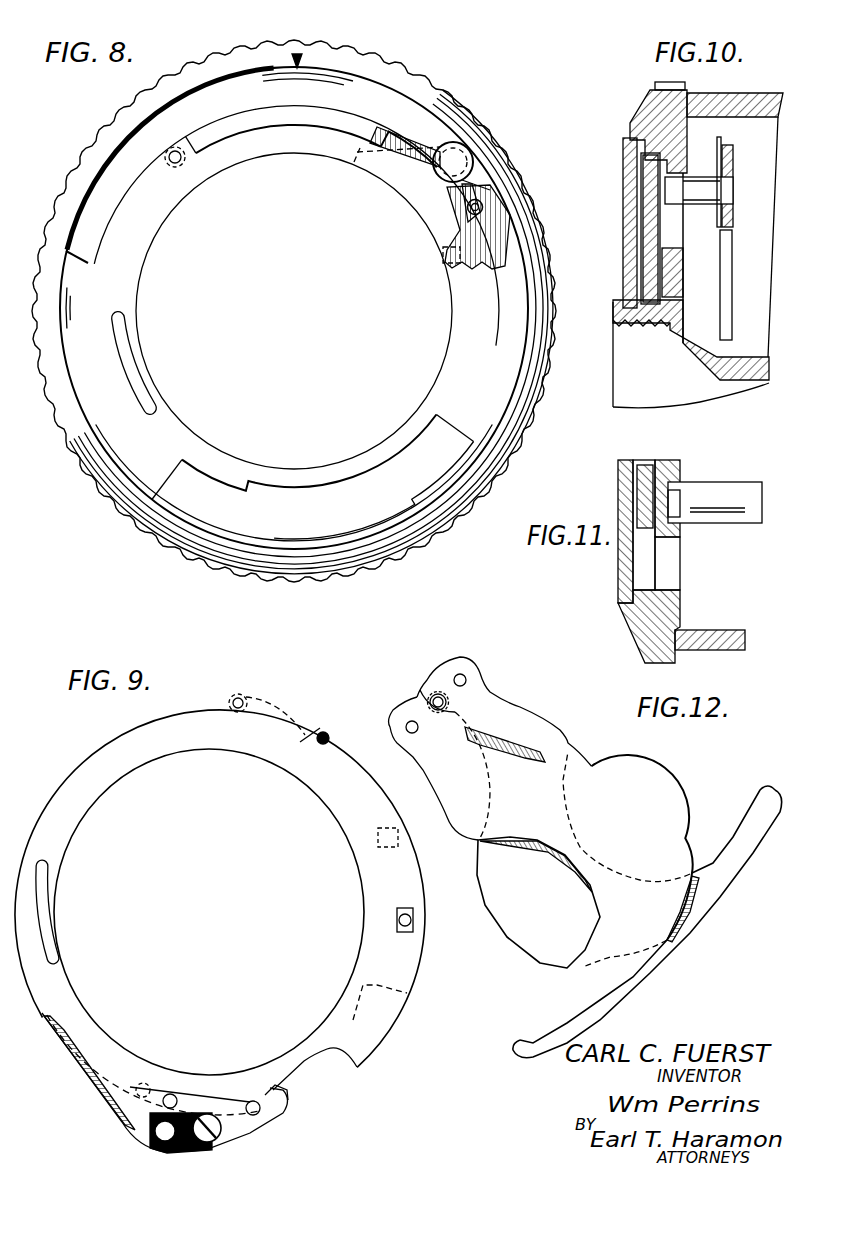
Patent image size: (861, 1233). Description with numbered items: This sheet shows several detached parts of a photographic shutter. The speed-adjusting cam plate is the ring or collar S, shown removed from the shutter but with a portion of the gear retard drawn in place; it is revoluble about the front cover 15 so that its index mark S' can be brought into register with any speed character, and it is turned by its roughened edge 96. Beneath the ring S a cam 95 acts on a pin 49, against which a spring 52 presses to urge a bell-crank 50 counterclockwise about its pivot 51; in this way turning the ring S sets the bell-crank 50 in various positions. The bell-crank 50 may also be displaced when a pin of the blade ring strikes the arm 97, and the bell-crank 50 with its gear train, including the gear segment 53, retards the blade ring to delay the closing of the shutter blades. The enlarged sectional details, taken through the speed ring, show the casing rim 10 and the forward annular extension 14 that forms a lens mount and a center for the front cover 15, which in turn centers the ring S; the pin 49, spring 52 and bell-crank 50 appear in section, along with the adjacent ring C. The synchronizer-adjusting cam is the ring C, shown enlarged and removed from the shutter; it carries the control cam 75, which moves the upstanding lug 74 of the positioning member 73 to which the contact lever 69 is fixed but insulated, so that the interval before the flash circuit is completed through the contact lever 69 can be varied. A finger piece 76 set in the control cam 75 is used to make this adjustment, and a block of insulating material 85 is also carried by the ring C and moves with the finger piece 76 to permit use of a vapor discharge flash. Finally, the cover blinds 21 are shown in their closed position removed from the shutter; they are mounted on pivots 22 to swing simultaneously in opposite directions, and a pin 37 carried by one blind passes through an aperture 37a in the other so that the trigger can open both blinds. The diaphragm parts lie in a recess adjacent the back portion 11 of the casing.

In FIG. 8, the upstanding rim 10 is at (325, 287).
In FIG. 10, the upstanding rim 10 is at (766, 105).
In FIG. 11, the upstanding rim 10 is at (717, 650).
In FIG. 8, the back portion 11 is at (170, 150).
In FIG. 10, the forward annular extension 14 is at (722, 372).
In FIG. 10, the front cover 15 is at (633, 140).
In FIG. 11, the front cover 15 is at (620, 594).
In FIG. 12, the cover-blinds 21 is at (585, 857).
In FIG. 12, the pivots 22 is at (465, 675).
In FIG. 12, the pin 37 is at (433, 697).
In FIG. 12, the aperture 37a is at (437, 692).
In FIG. 8, the pin 49 is at (484, 204).
In FIG. 10, the pin 49 is at (696, 184).
In FIG. 8, the bell-crank 50 is at (500, 236).
In FIG. 10, the bell-crank 50 is at (729, 282).
In FIG. 8, the pivot 51 is at (463, 152).
In FIG. 8, the spring 52 is at (478, 185).
In FIG. 10, the spring 52 is at (712, 230).
In FIG. 8, the gear segment 53 is at (483, 267).
In FIG. 9, the contact lever 69 is at (90, 1086).
In FIG. 9, the positioning member 73 is at (253, 1122).
In FIG. 9, the upstanding lug 74 is at (285, 1087).
In FIG. 9, the control cam 75 is at (312, 1060).
In FIG. 9, the finger piece 76 is at (411, 922).
In FIG. 9, the block of insulating material 85 is at (326, 730).
In FIG. 8, the cam 95 is at (490, 191).
In FIG. 10, the cam 95 is at (675, 172).
In FIG. 8, the roughened edge 96 is at (243, 42).
In FIG. 8, the arm 97 is at (385, 167).
In FIG. 8, the ring S is at (306, 310).
In FIG. 10, the ring S is at (674, 123).
In FIG. 11, the ring S is at (708, 518).
In FIG. 8, the index mark S' is at (313, 45).
In FIG. 10, the ring C is at (648, 264).
In FIG. 11, the ring C is at (645, 462).
In FIG. 9, the ring C is at (363, 984).